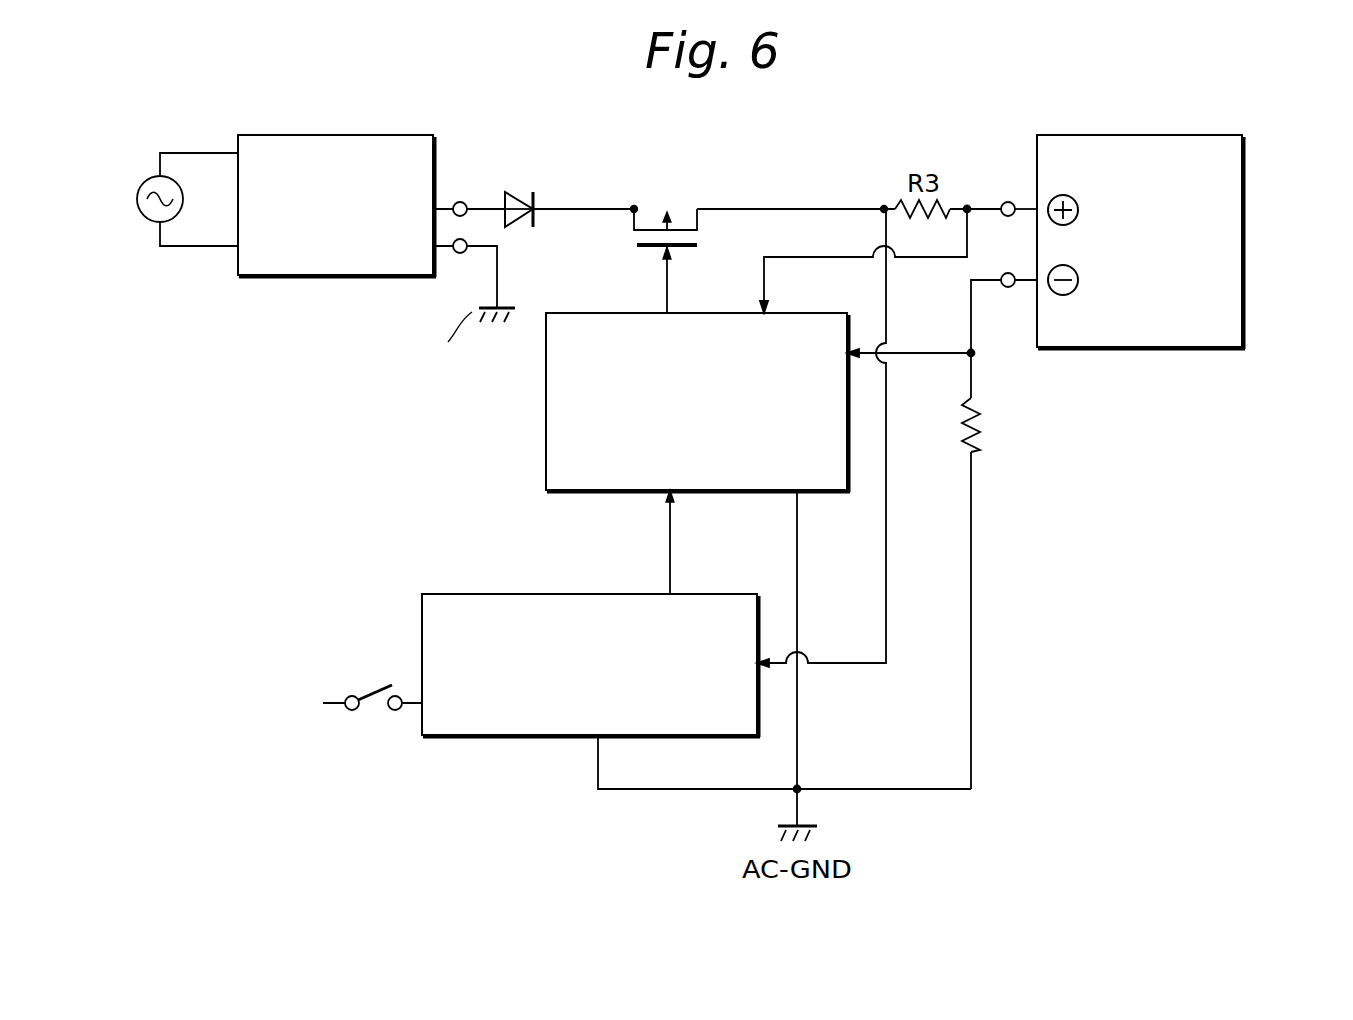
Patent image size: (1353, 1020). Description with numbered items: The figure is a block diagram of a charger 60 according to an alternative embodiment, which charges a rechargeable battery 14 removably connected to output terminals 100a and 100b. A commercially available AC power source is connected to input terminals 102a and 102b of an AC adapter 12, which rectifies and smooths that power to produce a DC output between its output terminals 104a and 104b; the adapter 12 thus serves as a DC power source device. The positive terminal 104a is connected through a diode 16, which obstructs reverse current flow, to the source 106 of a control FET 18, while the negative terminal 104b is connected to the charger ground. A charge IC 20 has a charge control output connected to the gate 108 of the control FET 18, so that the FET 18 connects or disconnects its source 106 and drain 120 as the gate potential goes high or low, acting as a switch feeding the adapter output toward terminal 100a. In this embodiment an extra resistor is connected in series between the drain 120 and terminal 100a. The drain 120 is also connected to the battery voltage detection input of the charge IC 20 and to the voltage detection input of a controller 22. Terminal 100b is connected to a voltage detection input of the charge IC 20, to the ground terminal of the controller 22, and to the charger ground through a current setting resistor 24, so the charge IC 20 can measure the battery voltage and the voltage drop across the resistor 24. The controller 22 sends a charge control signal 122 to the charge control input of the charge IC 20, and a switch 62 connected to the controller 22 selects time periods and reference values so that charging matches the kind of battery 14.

The AC adapter 12 is at (325, 133).
The rechargeable battery 14 is at (1242, 198).
The diode 16 is at (527, 192).
The control FET 18 is at (633, 225).
The charge IC 20 is at (546, 445).
The controller 22 is at (422, 594).
The current setting resistor 24 is at (971, 440).
The charger 60 is at (1094, 665).
The switch 62 is at (363, 688).
The output terminal 100a is at (1003, 198).
The output terminal 100b is at (1008, 287).
The input terminal 102a is at (188, 152).
The input terminal 102b is at (178, 248).
The output terminal 104a is at (463, 200).
The output terminal 104b is at (468, 237).
The source 106 is at (603, 208).
The gate 108 is at (672, 297).
The drain 120 is at (760, 209).
The charge control signal 122 is at (670, 575).